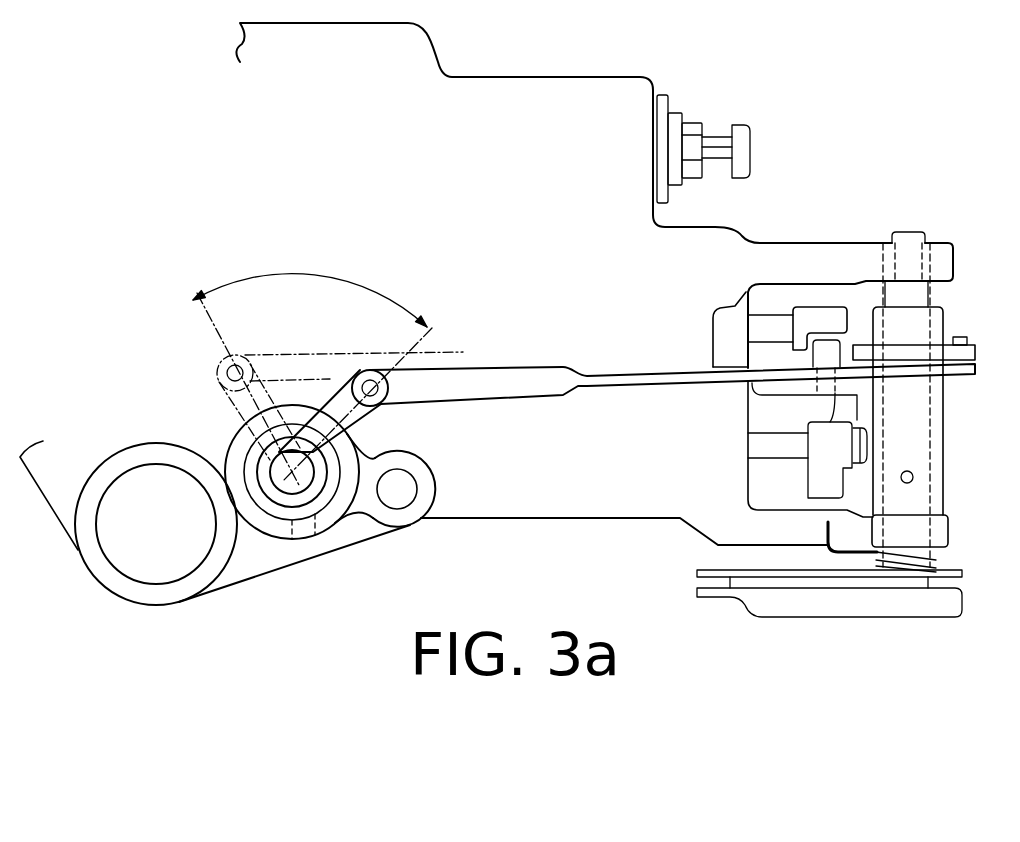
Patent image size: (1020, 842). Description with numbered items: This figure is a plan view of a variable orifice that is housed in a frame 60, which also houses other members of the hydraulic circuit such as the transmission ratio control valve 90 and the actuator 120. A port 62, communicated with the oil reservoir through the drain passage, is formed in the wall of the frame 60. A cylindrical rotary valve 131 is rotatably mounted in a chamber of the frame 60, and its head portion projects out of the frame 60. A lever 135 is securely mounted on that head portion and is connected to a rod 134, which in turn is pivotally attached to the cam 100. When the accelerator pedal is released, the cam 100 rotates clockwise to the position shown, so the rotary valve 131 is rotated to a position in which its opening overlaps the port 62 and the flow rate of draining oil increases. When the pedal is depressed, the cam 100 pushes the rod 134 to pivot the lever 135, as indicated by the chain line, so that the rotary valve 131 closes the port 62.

The frame 60 is at (533, 498).
The port 62 is at (292, 515).
The transmission ratio control valve 90 is at (806, 300).
The cam 100 is at (936, 350).
The actuator 120 is at (789, 478).
The rotary valve 131 is at (307, 478).
The rod 134 is at (535, 373).
The lever 135 is at (332, 403).